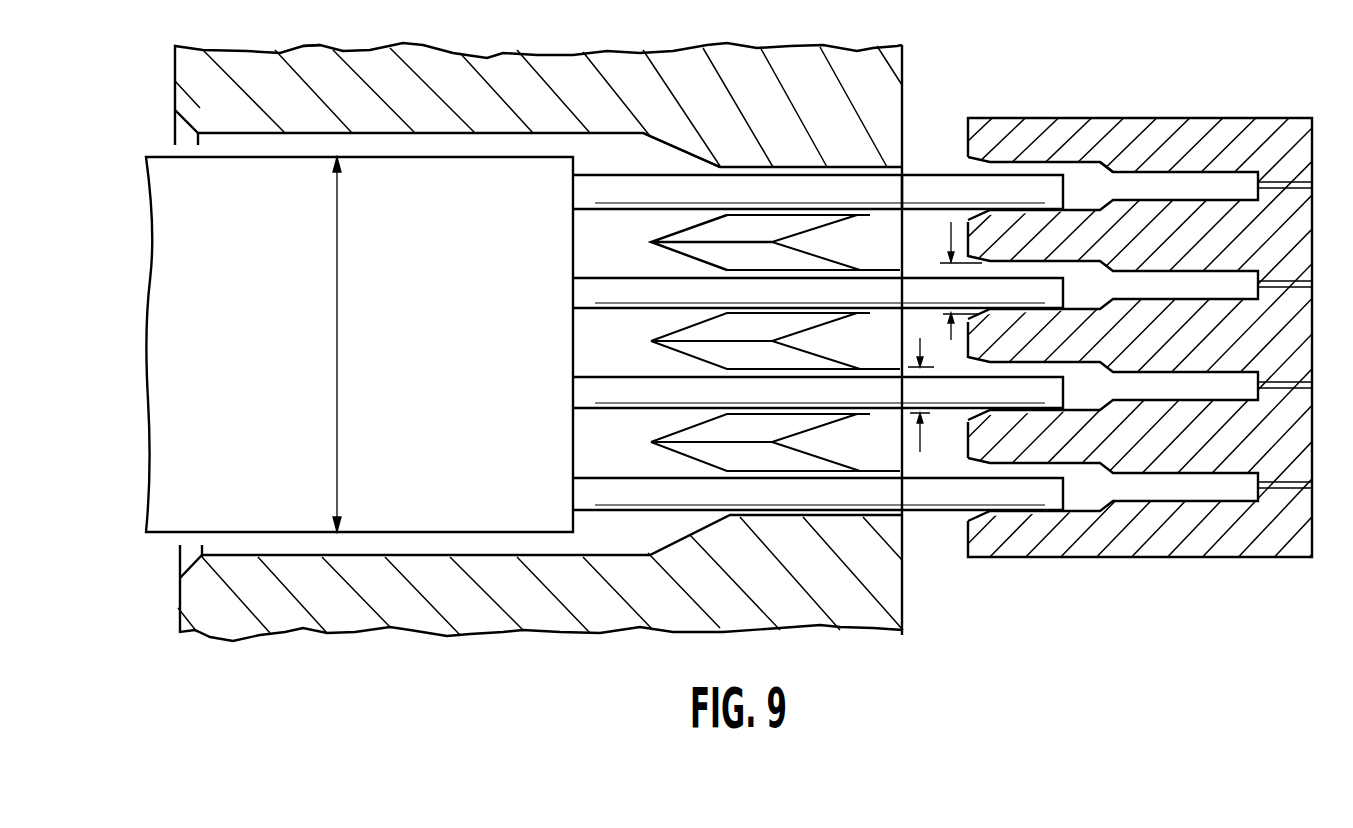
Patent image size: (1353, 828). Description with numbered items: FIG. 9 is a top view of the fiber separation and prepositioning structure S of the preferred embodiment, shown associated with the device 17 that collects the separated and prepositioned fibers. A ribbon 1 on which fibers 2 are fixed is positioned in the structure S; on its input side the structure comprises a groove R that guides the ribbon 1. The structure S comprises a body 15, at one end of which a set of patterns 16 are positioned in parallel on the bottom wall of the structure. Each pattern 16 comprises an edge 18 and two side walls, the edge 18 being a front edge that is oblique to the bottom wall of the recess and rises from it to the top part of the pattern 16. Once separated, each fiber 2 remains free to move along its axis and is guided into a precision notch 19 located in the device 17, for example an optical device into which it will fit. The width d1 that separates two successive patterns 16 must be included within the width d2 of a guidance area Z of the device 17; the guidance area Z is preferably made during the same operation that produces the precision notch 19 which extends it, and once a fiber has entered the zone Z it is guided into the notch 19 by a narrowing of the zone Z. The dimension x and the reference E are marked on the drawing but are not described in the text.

The ribbon 1 is at (173, 379).
The fibers 2 is at (950, 497).
The body 15 is at (470, 78).
The patterns 16 is at (717, 230).
The device 17 is at (1218, 517).
The edge 18 is at (692, 240).
The precision notch 19 is at (1217, 187).
The structure S is at (313, 44).
The groove R is at (593, 143).
The entry gap E is at (862, 172).
The guidance area Z is at (1088, 177).
The dimension x is at (349, 344).
The width separating two successive patterns d1 is at (934, 434).
The width of guidance area d2 is at (945, 294).